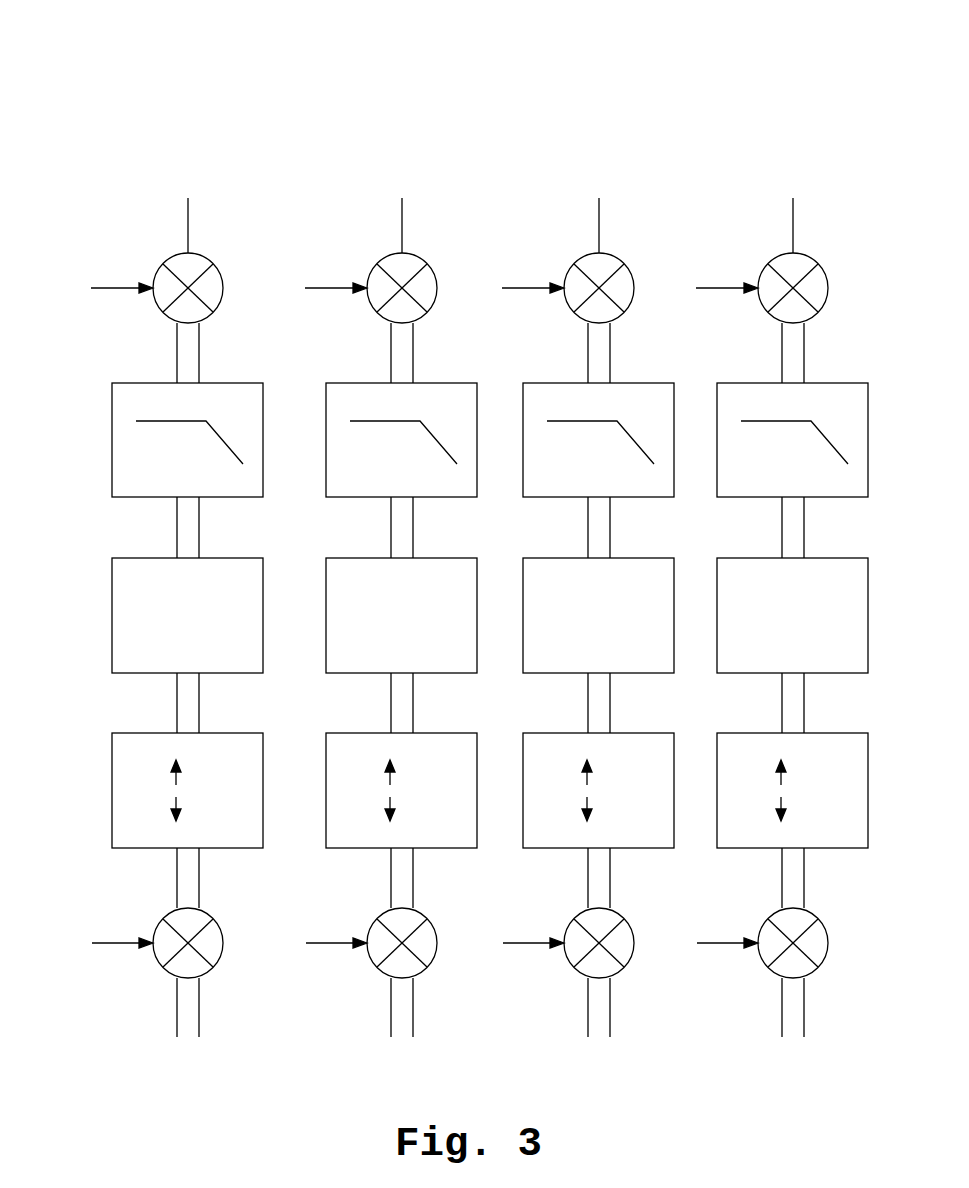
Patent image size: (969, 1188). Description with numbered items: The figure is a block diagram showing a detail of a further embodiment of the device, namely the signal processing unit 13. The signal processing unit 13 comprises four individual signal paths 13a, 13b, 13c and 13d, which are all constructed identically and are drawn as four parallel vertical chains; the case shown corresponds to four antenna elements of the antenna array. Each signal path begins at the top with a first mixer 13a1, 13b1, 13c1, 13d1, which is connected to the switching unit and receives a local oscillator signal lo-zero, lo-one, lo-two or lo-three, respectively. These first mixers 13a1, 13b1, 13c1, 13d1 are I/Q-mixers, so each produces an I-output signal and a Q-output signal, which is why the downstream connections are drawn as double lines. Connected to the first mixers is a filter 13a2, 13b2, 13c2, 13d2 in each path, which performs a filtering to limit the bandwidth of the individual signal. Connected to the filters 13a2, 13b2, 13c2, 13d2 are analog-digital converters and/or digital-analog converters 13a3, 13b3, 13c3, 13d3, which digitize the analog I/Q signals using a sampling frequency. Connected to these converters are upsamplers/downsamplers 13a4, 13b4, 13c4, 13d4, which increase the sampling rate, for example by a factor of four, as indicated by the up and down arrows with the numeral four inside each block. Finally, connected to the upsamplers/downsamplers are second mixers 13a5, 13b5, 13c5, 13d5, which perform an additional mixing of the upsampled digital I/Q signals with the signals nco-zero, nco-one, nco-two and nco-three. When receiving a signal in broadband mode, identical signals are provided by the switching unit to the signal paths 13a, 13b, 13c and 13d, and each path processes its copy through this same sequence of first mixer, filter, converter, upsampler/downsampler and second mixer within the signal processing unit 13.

The signal processing unit 13 is at (744, 108).
The signal path 13a is at (215, 160).
The signal path 13b is at (371, 160).
The signal path 13c is at (621, 163).
The signal path 13d is at (820, 163).
The first mixer 13a1 is at (157, 305).
The filter 13a2 is at (148, 498).
The analog-digital converter and/or digital-analog converter 13a3 is at (148, 674).
The upsampler/downsampler 13a4 is at (148, 849).
The second mixer 13a5 is at (158, 965).
The first mixer 13b1 is at (371, 305).
The filter 13b2 is at (362, 498).
The analog-digital converter and/or digital-analog converter 13b3 is at (362, 674).
The upsampler/downsampler 13b4 is at (362, 849).
The second mixer 13b5 is at (372, 965).
The first mixer 13c1 is at (568, 305).
The filter 13c2 is at (559, 498).
The analog-digital converter and/or digital-analog converter 13c3 is at (559, 674).
The upsampler/downsampler 13c4 is at (559, 849).
The second mixer 13c5 is at (569, 965).
The first mixer 13d1 is at (762, 305).
The filter 13d2 is at (753, 498).
The analog-digital converter and/or digital-analog converter 13d3 is at (753, 674).
The upsampler/downsampler 13d4 is at (753, 849).
The second mixer 13d5 is at (763, 965).